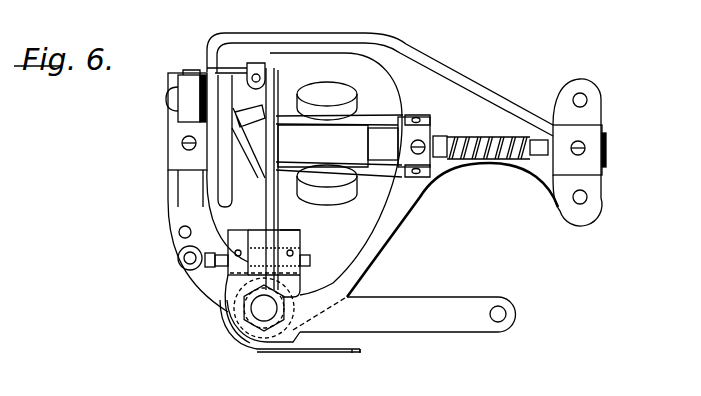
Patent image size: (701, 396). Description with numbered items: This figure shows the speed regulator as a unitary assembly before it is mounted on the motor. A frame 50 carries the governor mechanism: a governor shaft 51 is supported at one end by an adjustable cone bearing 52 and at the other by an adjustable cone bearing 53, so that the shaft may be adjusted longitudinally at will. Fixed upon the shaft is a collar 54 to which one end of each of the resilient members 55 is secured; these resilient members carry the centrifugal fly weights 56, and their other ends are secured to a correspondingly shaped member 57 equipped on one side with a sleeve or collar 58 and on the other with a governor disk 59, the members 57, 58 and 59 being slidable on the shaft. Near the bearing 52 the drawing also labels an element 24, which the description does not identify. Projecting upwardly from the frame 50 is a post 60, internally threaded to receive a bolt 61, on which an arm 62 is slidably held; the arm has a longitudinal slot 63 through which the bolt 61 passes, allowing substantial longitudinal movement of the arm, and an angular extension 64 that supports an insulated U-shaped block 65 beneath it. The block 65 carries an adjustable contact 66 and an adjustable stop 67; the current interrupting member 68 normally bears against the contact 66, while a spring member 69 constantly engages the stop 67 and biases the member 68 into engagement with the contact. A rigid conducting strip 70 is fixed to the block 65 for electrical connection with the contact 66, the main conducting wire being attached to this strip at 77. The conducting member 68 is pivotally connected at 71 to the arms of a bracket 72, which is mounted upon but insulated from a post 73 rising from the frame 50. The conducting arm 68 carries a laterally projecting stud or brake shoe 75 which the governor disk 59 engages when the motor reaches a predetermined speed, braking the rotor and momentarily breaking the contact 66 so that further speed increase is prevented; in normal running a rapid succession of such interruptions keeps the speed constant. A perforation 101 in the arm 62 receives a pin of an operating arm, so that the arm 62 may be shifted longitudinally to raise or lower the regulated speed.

The spring 24 is at (463, 158).
The frame 50 is at (492, 88).
The governor shaft 51 is at (358, 138).
The adjustable cone bearing 52 is at (553, 146).
The adjustable cone bearing 53 is at (213, 148).
The collar 54 is at (418, 175).
The resilient members 55 is at (391, 193).
The centrifugal masses or fly weights 56 is at (327, 144).
The correspondingly shaped member 57 is at (248, 141).
The sleeve or collar 58 is at (339, 146).
The governor disk 59 is at (230, 100).
The post 60 is at (247, 340).
The bolt 61 is at (272, 330).
The arm 62 is at (443, 297).
The longitudinal slot 63 is at (243, 337).
The angular extension 64 is at (255, 272).
The insulated U-shaped block 65 is at (302, 250).
The adjustable contact 66 is at (226, 262).
The adjustable stop 67 is at (303, 263).
The current interrupting member 68 is at (266, 216).
The spring member 69 is at (278, 216).
The rigid conducting member or strip 70 is at (330, 353).
The pivotal connection 71 is at (258, 75).
The bracket 72 is at (232, 67).
The post 73 is at (183, 71).
The laterally projecting stud or brake shoe 75 is at (232, 168).
The attachment point 77 is at (352, 352).
The perforation 101 is at (508, 313).